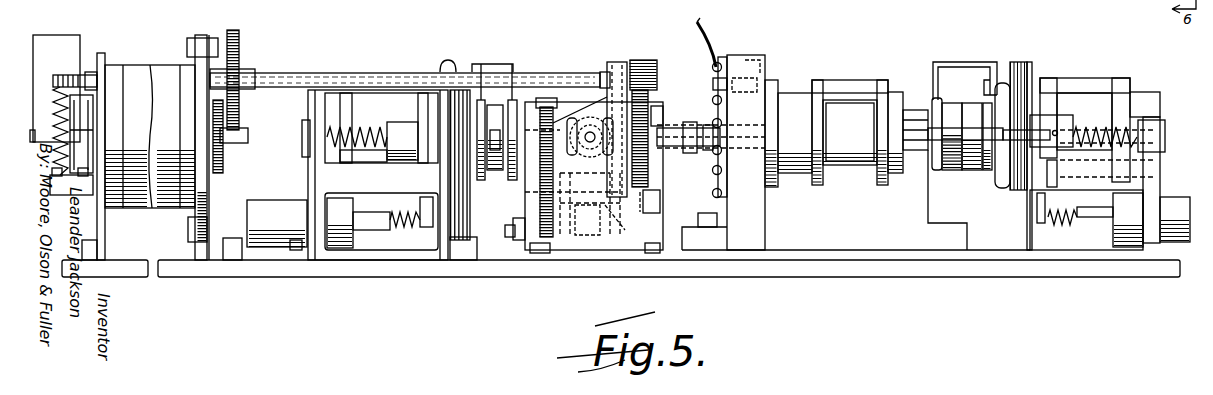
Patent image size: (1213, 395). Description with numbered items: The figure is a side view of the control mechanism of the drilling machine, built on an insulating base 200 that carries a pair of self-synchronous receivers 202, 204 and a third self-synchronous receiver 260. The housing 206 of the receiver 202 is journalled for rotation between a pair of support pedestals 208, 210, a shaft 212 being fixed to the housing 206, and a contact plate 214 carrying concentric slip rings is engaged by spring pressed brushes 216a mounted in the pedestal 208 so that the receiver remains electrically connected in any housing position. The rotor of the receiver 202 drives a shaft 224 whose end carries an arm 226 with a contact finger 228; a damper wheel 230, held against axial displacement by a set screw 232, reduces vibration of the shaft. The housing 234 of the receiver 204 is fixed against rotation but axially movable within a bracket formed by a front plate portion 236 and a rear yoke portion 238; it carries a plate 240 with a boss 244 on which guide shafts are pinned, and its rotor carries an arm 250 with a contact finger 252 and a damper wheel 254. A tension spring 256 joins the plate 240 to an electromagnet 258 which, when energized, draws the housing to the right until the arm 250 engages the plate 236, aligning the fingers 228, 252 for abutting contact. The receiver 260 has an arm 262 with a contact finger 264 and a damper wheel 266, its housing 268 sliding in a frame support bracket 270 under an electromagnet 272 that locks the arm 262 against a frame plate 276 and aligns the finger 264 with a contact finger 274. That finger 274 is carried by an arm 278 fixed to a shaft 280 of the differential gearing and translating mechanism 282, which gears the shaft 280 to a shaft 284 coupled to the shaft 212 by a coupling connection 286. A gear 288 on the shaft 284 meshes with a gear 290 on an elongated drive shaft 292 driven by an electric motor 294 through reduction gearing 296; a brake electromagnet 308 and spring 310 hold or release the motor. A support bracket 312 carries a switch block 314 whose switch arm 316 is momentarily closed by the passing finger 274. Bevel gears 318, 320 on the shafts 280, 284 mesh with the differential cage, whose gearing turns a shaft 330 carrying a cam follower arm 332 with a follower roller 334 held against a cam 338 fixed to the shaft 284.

The insulating base 200 is at (210, 272).
The self-synchronous receiver 202 is at (840, 80).
The self-synchronous receiver 204 is at (1093, 72).
The housing 206 is at (840, 175).
The support pedestal 208 is at (748, 224).
The support pedestal 210 is at (922, 237).
The shaft 212 is at (722, 160).
The contact plate 214 is at (770, 80).
The spring pressed brush 216a is at (750, 85).
The shaft 224 is at (915, 110).
The arm 226 is at (925, 170).
The contact wire or finger 228 is at (937, 62).
The damper wheel 230 is at (948, 112).
The set screw 232 is at (950, 172).
The housing 234 is at (1063, 100).
The front plate portion 236 is at (1015, 62).
The rear yoke portion 238 is at (1152, 187).
The plate 240 is at (1040, 205).
The boss 244 is at (1068, 125).
The arm 250 is at (988, 172).
The contact finger 252 is at (990, 63).
The damper wheel 254 is at (965, 172).
The tension spring 256 is at (1062, 227).
The electromagnet 258 is at (1130, 247).
The self-synchronous receiver 260 is at (293, 130).
The arm 262 is at (478, 168).
The contact finger 264 is at (495, 98).
The damper wheel 266 is at (498, 172).
The housing 268 is at (360, 98).
The frame support bracket 270 is at (323, 177).
The electromagnet 272 is at (273, 245).
The contact finger 274 is at (482, 98).
The frame plate 276 is at (445, 62).
The arm 278 is at (514, 98).
The shaft 280 is at (538, 100).
The differential gearing structure and translating mechanism 282 is at (608, 45).
The shaft 284 is at (660, 104).
The coupling connection 286 is at (718, 147).
The gear 288 is at (638, 60).
The gear 290 is at (655, 72).
The drive shaft 292 is at (266, 72).
The electric motor 294 is at (133, 65).
The reduction gearing 296 is at (241, 112).
The electromagnet 308 is at (72, 34).
The spring 310 is at (55, 97).
The support bracket 312 is at (560, 248).
The switch block 314 is at (520, 238).
The switch arm 316 is at (507, 229).
The bevel gear 318 is at (548, 108).
The bevel gear 320 is at (612, 42).
The shaft 330 is at (580, 224).
The cam follower arm 332 is at (630, 222).
The follower roller 334 is at (649, 209).
The cam 338 is at (667, 127).